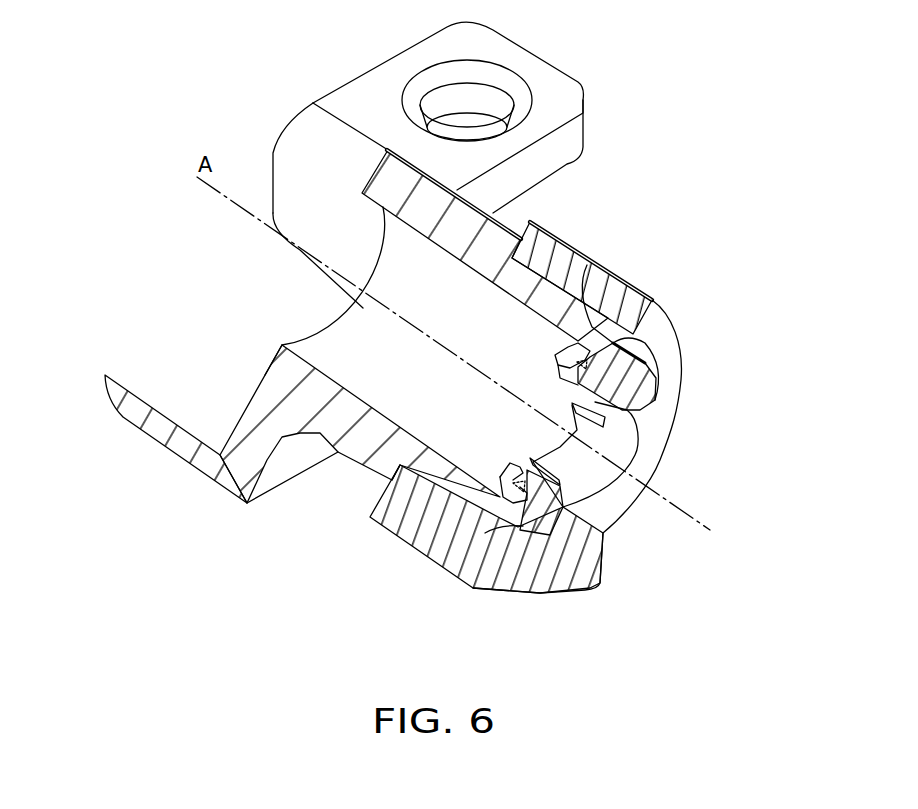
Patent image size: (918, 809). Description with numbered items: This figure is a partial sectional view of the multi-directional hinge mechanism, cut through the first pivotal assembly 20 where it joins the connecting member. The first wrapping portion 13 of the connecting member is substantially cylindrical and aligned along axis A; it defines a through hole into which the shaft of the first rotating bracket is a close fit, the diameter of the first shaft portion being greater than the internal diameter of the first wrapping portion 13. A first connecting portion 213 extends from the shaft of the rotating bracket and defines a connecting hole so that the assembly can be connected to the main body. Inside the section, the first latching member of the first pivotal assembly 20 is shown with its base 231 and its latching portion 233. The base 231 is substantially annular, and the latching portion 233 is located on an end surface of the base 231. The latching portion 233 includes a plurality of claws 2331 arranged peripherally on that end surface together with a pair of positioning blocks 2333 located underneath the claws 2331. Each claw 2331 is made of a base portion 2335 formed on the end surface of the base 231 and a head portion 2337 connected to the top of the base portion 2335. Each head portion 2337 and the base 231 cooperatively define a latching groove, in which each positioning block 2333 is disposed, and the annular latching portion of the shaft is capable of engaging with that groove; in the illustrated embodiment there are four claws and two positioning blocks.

The first connecting portion 213 is at (518, 50).
The first pivotal assembly 20 is at (514, 220).
The first wrapping portion 13 is at (552, 248).
The base 231 is at (660, 427).
The latching portion 233 is at (760, 287).
The claw 2331 is at (587, 265).
The positioning block 2333 is at (620, 332).
The base portion 2335 is at (517, 527).
The head portion 2337 is at (508, 482).